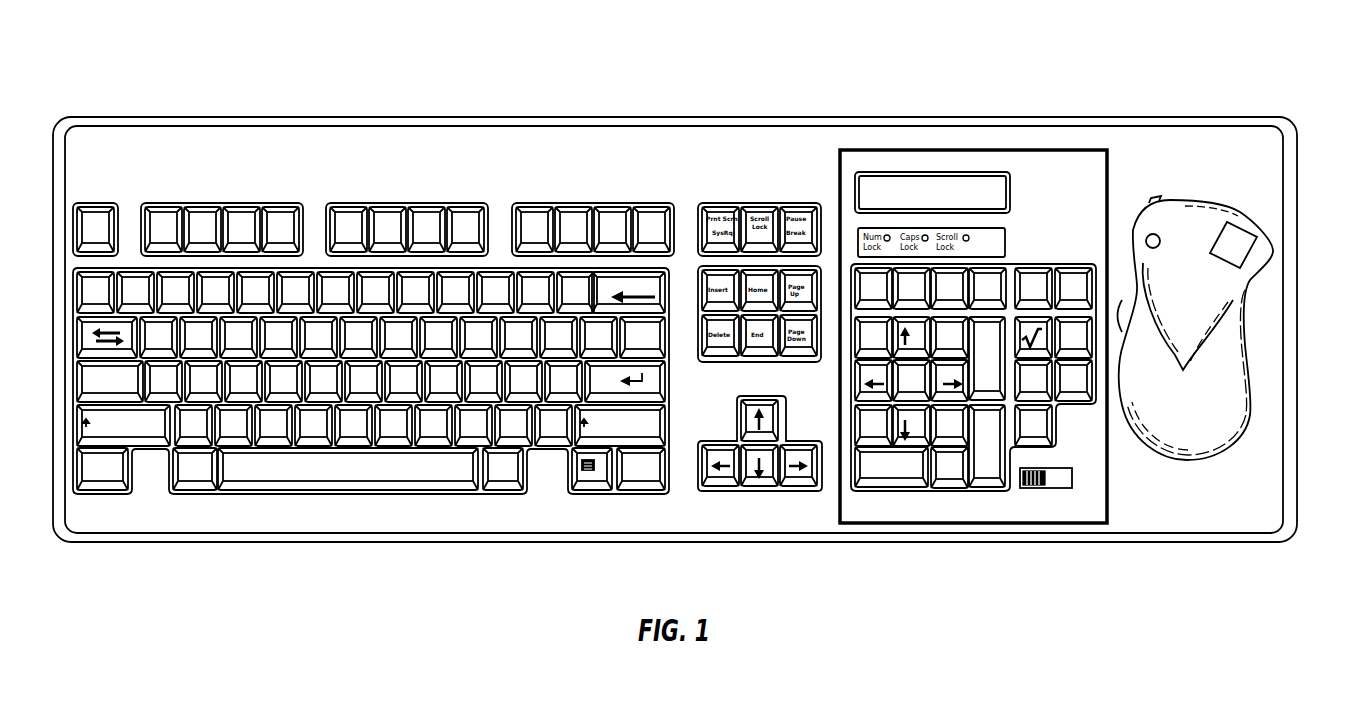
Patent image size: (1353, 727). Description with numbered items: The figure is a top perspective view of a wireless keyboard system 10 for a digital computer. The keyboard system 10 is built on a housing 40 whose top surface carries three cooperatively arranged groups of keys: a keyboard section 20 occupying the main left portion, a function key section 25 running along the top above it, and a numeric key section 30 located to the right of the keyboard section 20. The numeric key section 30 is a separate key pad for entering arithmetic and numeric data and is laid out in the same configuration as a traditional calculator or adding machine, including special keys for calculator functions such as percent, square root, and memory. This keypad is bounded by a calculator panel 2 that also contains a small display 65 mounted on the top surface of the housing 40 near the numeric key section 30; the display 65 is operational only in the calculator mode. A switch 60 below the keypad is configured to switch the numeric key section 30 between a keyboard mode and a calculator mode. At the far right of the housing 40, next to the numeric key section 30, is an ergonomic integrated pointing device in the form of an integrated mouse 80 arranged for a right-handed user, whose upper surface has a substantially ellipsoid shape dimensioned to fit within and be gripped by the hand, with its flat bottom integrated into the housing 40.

The wireless keyboard system 10 is at (1243, 37).
The calculator panel 2 is at (1016, 150).
The keyboard section 20 is at (360, 501).
The function key section 25 is at (241, 198).
The numeric key section 30 is at (898, 496).
The housing 40 is at (108, 118).
The switch 60 is at (1073, 478).
The display 65 is at (852, 196).
The integrated mouse 80 is at (1254, 190).